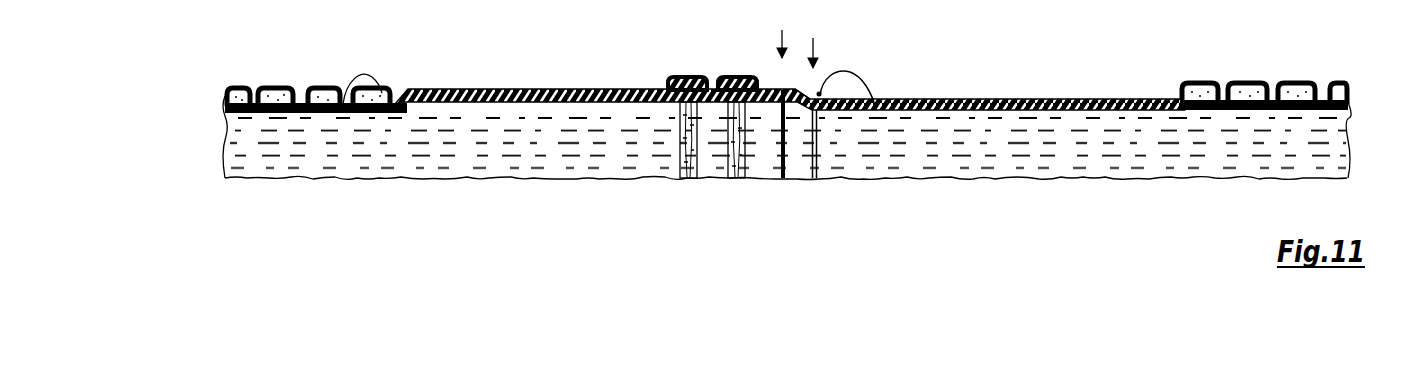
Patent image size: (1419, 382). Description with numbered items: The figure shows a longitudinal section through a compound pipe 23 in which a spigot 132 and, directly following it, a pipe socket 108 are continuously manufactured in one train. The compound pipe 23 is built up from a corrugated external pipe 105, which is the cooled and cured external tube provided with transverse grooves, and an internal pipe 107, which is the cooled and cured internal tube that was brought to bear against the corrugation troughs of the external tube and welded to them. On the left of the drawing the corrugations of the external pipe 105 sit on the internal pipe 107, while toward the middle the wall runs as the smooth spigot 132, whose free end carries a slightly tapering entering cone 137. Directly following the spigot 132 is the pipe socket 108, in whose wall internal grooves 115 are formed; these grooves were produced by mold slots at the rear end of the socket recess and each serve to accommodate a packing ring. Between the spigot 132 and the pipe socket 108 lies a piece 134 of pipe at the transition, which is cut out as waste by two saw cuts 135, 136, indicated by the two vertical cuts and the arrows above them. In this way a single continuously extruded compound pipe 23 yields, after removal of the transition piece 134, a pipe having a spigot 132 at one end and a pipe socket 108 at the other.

The compound pipe 23 is at (358, 127).
The corrugated external pipe 105 is at (335, 113).
The internal pipe 107 is at (320, 114).
The pipe socket 108 is at (612, 97).
The internal grooves 115 is at (733, 100).
The spigot 132 is at (968, 108).
The piece of pipe 134 is at (795, 104).
The saw cut 135 is at (817, 153).
The saw cut 136 is at (785, 155).
The entering cone 137 is at (867, 107).